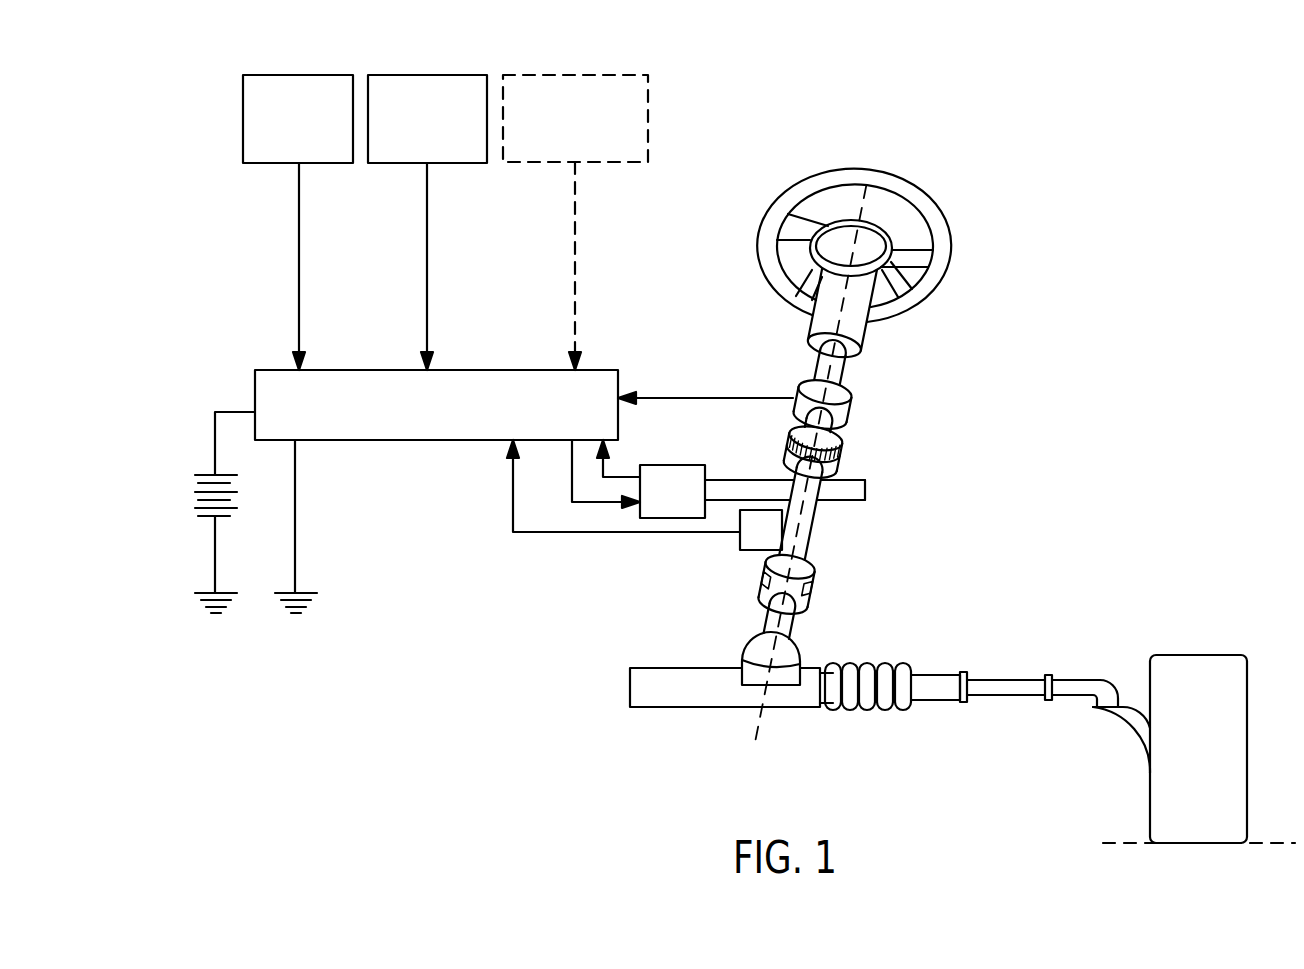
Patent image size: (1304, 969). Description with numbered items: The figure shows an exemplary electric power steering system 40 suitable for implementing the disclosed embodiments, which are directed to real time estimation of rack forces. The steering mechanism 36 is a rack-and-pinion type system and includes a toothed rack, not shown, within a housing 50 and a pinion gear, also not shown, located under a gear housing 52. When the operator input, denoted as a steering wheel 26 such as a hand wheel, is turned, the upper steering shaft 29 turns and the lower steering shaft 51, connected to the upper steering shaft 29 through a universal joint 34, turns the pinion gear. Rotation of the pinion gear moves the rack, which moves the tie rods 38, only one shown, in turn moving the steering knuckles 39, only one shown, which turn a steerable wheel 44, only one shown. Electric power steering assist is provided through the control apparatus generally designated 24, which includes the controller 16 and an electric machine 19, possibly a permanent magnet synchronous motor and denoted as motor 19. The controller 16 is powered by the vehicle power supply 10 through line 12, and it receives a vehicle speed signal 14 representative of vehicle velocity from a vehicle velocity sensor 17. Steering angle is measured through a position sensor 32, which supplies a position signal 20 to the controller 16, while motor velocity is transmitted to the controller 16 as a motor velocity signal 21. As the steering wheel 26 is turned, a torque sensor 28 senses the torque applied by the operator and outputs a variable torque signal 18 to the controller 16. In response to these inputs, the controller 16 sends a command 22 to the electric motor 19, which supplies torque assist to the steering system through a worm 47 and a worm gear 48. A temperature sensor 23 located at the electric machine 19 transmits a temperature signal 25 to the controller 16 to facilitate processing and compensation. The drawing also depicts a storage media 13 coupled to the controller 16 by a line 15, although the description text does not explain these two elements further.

The vehicle power supply 10 is at (195, 492).
The line 12 is at (230, 410).
The storage media 13 is at (263, 167).
The vehicle speed signal 14 is at (425, 283).
The storage media signal line 15 is at (297, 288).
The controller 16 is at (422, 442).
The vehicle velocity sensor 17 is at (381, 167).
The torque signal 18 is at (717, 393).
The electric machine 19 is at (683, 463).
The position signal 20 is at (628, 533).
The motor velocity signal 21 is at (600, 465).
The command 22 is at (587, 505).
The temperature sensor 23 is at (532, 167).
The control apparatus 24 is at (1045, 375).
The temperature signal 25 is at (573, 283).
The steering wheel 26 is at (907, 197).
The torque sensor 28 is at (847, 400).
The upper steering shaft 29 is at (838, 357).
The position sensor 32 is at (740, 540).
The universal joint 34 is at (813, 577).
The steering mechanism 36 is at (905, 648).
The tie rod 38 is at (1002, 688).
The steering knuckle 39 is at (1120, 737).
The electric power steering system 40 is at (1121, 470).
The steerable wheel 44 is at (1187, 668).
The worm 47 is at (857, 493).
The worm gear 48 is at (833, 450).
The housing 50 is at (668, 697).
The lower steering shaft 51 is at (787, 627).
The gear housing 52 is at (753, 648).